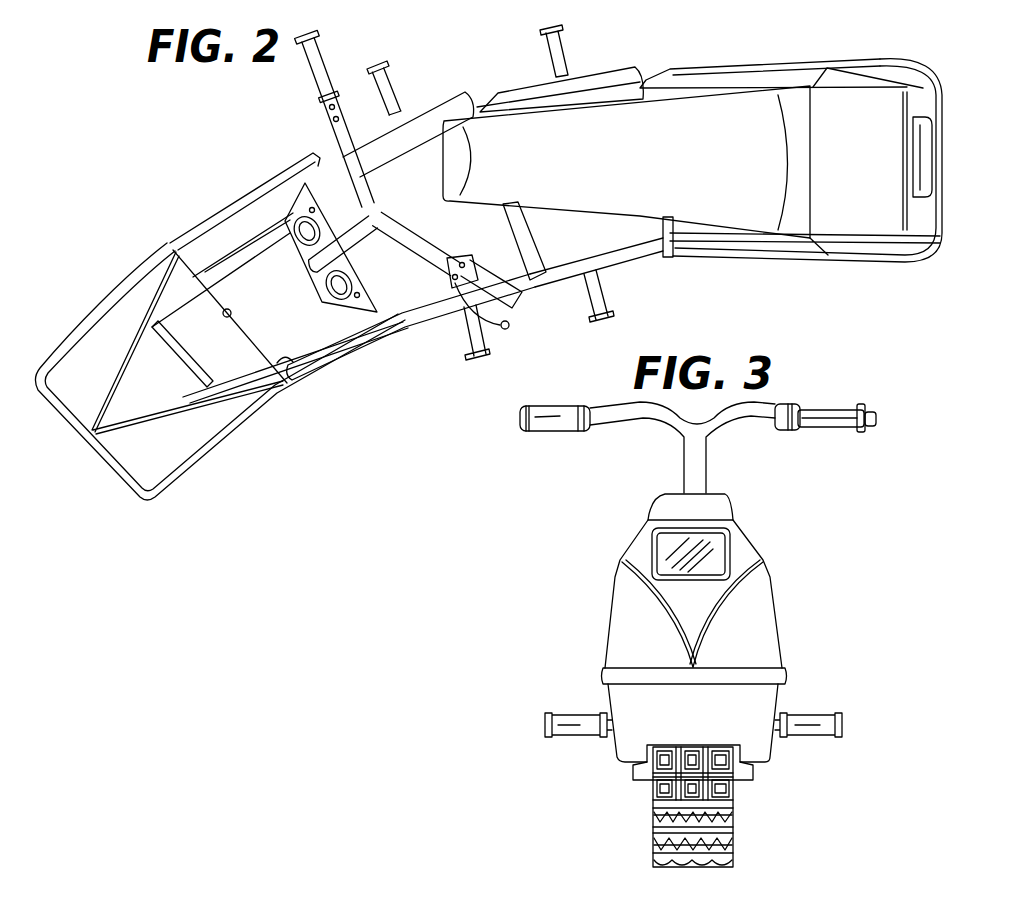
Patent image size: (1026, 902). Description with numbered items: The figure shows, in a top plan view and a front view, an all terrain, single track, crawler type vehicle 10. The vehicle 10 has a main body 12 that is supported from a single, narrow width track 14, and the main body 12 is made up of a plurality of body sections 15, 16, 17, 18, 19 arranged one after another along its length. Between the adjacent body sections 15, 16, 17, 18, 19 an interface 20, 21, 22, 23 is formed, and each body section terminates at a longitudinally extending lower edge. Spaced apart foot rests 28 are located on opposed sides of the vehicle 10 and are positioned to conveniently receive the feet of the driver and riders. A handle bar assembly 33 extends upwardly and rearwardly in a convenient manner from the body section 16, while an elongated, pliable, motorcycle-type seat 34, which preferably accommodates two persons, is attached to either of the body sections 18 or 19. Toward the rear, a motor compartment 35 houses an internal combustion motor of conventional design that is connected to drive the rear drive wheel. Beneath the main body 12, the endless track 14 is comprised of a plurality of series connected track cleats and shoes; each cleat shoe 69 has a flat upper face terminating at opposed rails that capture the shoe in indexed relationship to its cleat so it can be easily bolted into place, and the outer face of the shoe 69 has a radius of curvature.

In FIG. 2, the vehicle 10 is at (130, 190).
In FIG. 3, the vehicle 10 is at (609, 501).
In FIG. 3, the main body 12 is at (772, 590).
In FIG. 3, the track 14 is at (738, 815).
In FIG. 2, the body section 15 is at (250, 407).
In FIG. 3, the body section 15 is at (617, 575).
In FIG. 2, the body section 16 is at (243, 205).
In FIG. 2, the body section 17 is at (451, 95).
In FIG. 2, the body section 18 is at (597, 72).
In FIG. 2, the body section 19 is at (734, 70).
In FIG. 2, the interface 20 is at (312, 373).
In FIG. 2, the interface 21 is at (395, 258).
In FIG. 2, the interface 22 is at (523, 236).
In FIG. 2, the interface 23 is at (672, 233).
In FIG. 2, the foot rests 28 is at (548, 48).
In FIG. 3, the foot rests 28 is at (567, 714).
In FIG. 2, the handle bar assembly 33 is at (328, 138).
In FIG. 3, the handle bar assembly 33 is at (826, 408).
In FIG. 2, the seat 34 is at (650, 142).
In FIG. 2, the motor compartment 35 is at (880, 98).
In FIG. 3, the cleat shoe 69 is at (686, 862).